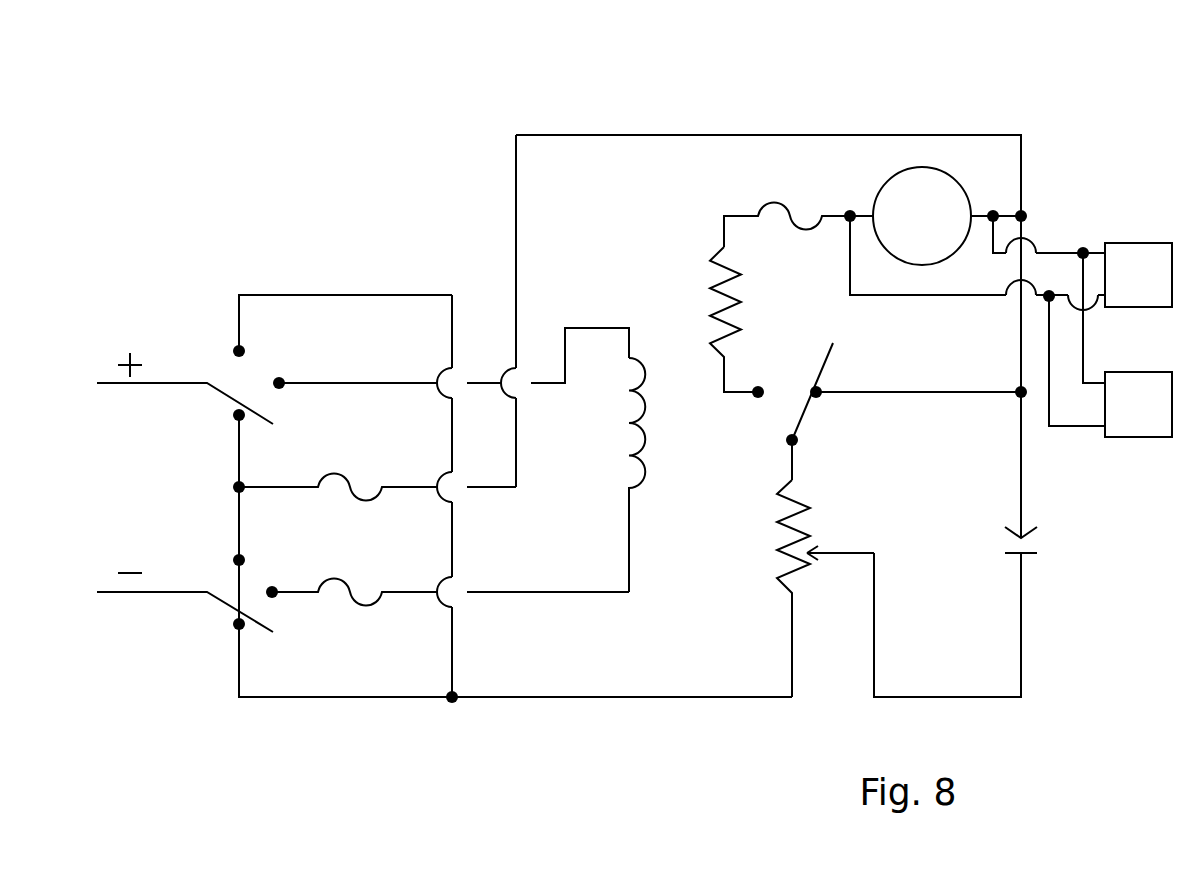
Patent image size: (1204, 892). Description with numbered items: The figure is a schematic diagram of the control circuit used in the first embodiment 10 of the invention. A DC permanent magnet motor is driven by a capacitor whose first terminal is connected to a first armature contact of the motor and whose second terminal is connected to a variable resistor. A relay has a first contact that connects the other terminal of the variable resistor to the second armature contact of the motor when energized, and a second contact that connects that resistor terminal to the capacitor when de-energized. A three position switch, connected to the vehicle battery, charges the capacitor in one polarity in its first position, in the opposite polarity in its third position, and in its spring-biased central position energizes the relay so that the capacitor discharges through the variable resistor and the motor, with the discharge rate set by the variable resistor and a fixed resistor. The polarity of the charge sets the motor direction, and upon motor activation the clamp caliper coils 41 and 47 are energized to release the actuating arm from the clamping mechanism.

The first embodiment 10 is at (483, 158).
The clamp caliper coil 41 is at (1145, 258).
The clamp caliper coil 47 is at (1130, 425).